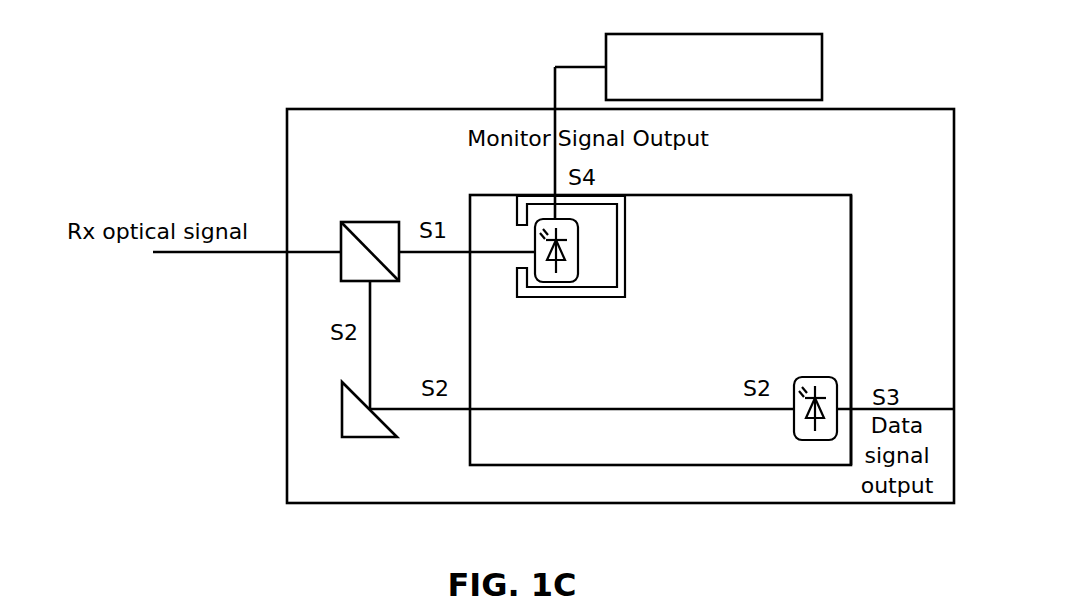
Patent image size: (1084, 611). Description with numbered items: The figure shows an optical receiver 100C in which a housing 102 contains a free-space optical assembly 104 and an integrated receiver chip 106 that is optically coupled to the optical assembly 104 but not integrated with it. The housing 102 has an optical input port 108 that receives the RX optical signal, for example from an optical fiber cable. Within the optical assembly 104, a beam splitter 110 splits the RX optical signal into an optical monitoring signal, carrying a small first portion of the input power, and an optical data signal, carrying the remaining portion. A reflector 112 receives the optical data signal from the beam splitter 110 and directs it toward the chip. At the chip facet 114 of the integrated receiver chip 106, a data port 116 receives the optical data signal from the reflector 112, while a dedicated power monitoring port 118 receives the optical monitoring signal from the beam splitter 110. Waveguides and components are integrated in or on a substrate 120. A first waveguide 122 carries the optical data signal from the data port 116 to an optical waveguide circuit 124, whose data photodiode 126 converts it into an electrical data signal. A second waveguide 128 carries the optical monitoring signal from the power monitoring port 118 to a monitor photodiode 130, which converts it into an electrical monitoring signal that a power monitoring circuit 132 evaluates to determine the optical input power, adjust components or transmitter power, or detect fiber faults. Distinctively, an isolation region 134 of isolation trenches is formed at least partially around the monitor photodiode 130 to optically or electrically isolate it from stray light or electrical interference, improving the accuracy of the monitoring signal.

The optical receiver 100C is at (172, 31).
The housing 102 is at (431, 108).
The optical assembly 104 is at (356, 296).
The integrated receiver chip 106 is at (746, 194).
The optical input port 108 is at (280, 260).
The beam splitter 110 is at (375, 235).
The reflector 112 is at (342, 422).
The chip facet 114 is at (853, 247).
The data port 116 is at (463, 413).
The power monitoring port 118 is at (463, 255).
The substrate 120 is at (833, 299).
The first waveguide 122 is at (562, 407).
The optical waveguide circuit 124 is at (776, 388).
The data photodiode 126 is at (793, 423).
The second waveguide 128 is at (494, 253).
The monitor photodiode 130 is at (578, 248).
The power monitoring circuit 132 is at (822, 70).
The isolation region 134 is at (631, 220).